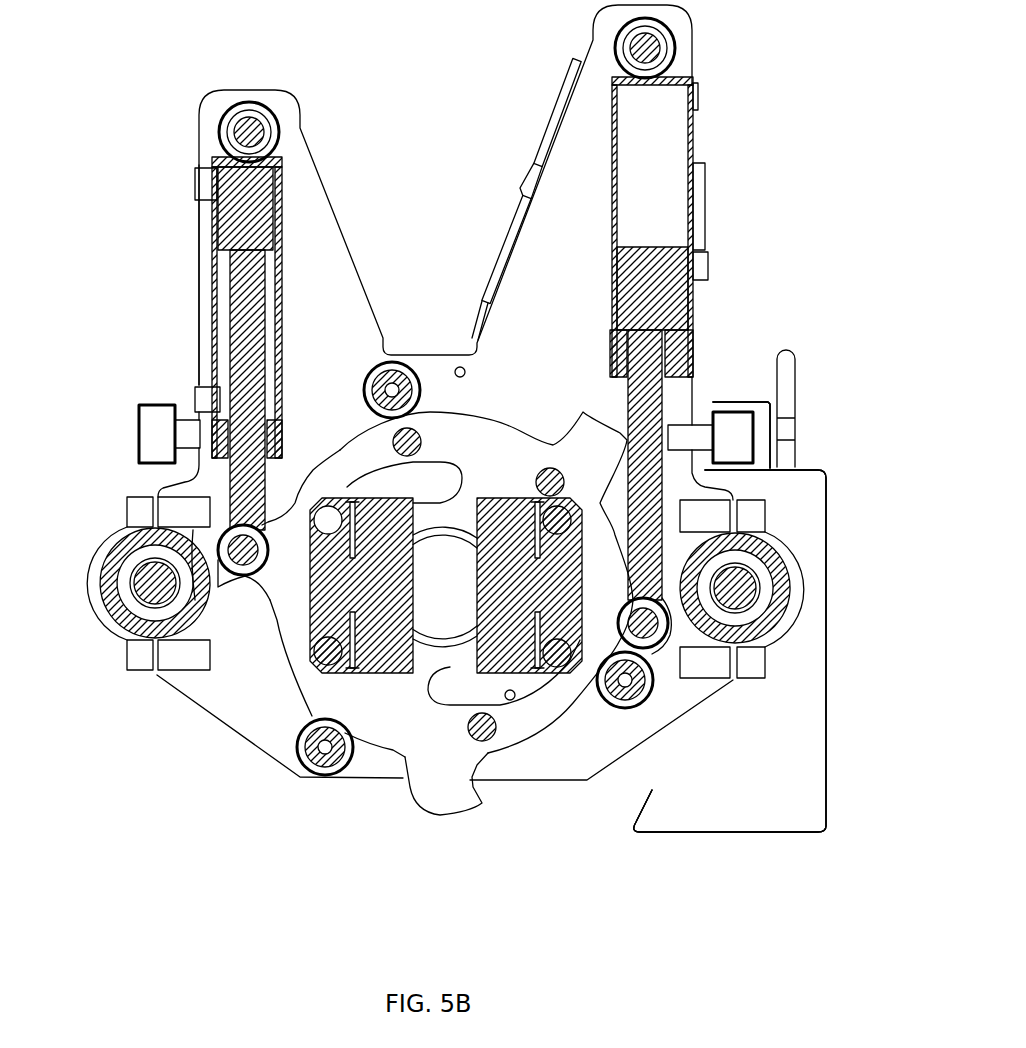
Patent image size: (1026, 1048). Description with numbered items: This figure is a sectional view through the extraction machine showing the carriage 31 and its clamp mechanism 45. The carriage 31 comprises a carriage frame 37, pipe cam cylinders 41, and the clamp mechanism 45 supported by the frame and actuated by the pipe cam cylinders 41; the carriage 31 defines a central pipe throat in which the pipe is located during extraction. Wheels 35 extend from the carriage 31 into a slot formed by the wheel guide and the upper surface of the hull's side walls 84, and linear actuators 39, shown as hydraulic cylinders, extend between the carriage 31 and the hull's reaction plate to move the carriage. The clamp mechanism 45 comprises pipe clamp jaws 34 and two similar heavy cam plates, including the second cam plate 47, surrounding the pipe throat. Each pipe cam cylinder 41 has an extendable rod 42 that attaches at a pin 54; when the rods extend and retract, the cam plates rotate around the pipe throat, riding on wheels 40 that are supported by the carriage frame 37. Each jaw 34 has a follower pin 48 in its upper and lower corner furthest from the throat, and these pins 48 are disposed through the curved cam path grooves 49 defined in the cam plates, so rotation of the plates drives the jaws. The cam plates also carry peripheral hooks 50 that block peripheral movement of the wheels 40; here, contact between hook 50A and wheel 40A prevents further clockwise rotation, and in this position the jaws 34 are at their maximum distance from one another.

The carriage 31 is at (388, 115).
The pipe clamp jaws 34 is at (370, 672).
The wheels 35 is at (155, 405).
The carriage frame 37 is at (282, 105).
The linear actuators 39 is at (113, 617).
The wheels 40 is at (383, 361).
The wheel 40A is at (638, 703).
The pipe cam cylinders 41 is at (220, 293).
The extendable rod 42 is at (230, 333).
The clamp mechanism 45 is at (253, 707).
The second cam plate 47 is at (415, 733).
The follower pin 48 is at (322, 515).
The cam path grooves 49 is at (442, 708).
The peripheral hooks 50 is at (253, 583).
The hook 50A is at (653, 653).
The pins 54 is at (220, 543).
The side walls 84 is at (827, 540).